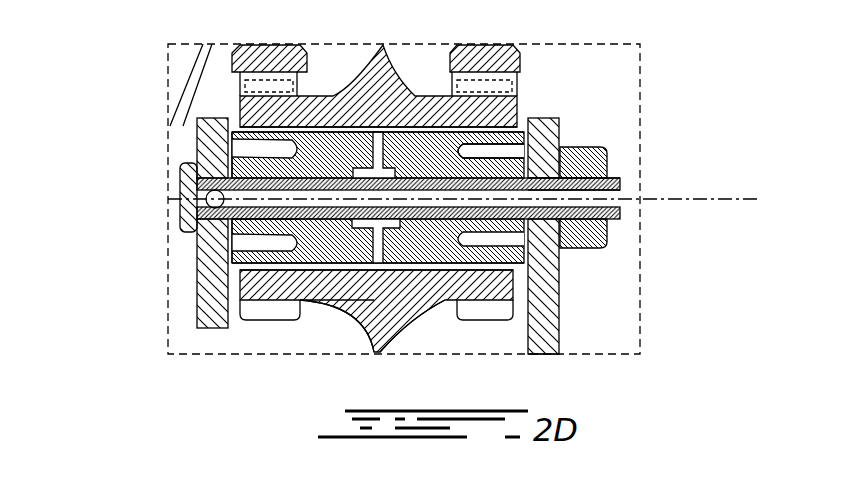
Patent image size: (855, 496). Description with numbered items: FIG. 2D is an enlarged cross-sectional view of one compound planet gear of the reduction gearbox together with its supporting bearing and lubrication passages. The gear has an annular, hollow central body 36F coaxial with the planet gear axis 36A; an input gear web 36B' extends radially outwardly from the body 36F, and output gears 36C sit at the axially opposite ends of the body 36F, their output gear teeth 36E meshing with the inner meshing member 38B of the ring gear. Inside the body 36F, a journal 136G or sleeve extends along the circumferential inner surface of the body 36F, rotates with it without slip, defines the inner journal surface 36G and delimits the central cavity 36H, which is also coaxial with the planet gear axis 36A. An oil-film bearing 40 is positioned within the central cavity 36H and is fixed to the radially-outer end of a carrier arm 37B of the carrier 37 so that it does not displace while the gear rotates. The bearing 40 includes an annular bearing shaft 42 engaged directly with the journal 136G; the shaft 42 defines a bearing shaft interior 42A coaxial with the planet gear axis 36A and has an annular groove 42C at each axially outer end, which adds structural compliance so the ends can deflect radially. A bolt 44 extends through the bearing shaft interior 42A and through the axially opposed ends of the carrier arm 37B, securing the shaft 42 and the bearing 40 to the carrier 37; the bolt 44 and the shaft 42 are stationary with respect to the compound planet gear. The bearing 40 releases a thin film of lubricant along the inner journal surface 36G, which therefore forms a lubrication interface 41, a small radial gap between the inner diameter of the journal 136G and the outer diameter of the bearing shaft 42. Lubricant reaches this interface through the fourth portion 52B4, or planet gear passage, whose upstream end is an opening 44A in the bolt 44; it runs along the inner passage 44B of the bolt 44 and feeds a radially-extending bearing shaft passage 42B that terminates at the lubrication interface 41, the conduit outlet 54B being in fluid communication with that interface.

The planet gear axis 36A is at (740, 200).
The input gear web 36B' is at (368, 347).
The output gear 36C is at (228, 306).
The output gear teeth 36E is at (267, 307).
The central body 36F is at (248, 107).
The inner journal surface 36G is at (505, 264).
The central cavity 36H is at (535, 155).
The carrier 37 is at (548, 295).
The carrier arm 37B is at (548, 332).
The inner meshing member 38B is at (240, 78).
The oil-film bearing 40 is at (230, 222).
The lubrication interface 41 is at (406, 135).
The bearing shaft 42 is at (336, 150).
The bearing shaft interior 42A is at (557, 185).
The bearing shaft passage 42B is at (398, 172).
The annular groove 42C is at (230, 244).
The bolt 44 is at (182, 204).
The opening 44A is at (205, 196).
The inner passage 44B is at (640, 196).
The fourth portion 52B4 is at (318, 226).
The conduit outlet 54B is at (391, 113).
The journal 136G is at (247, 130).